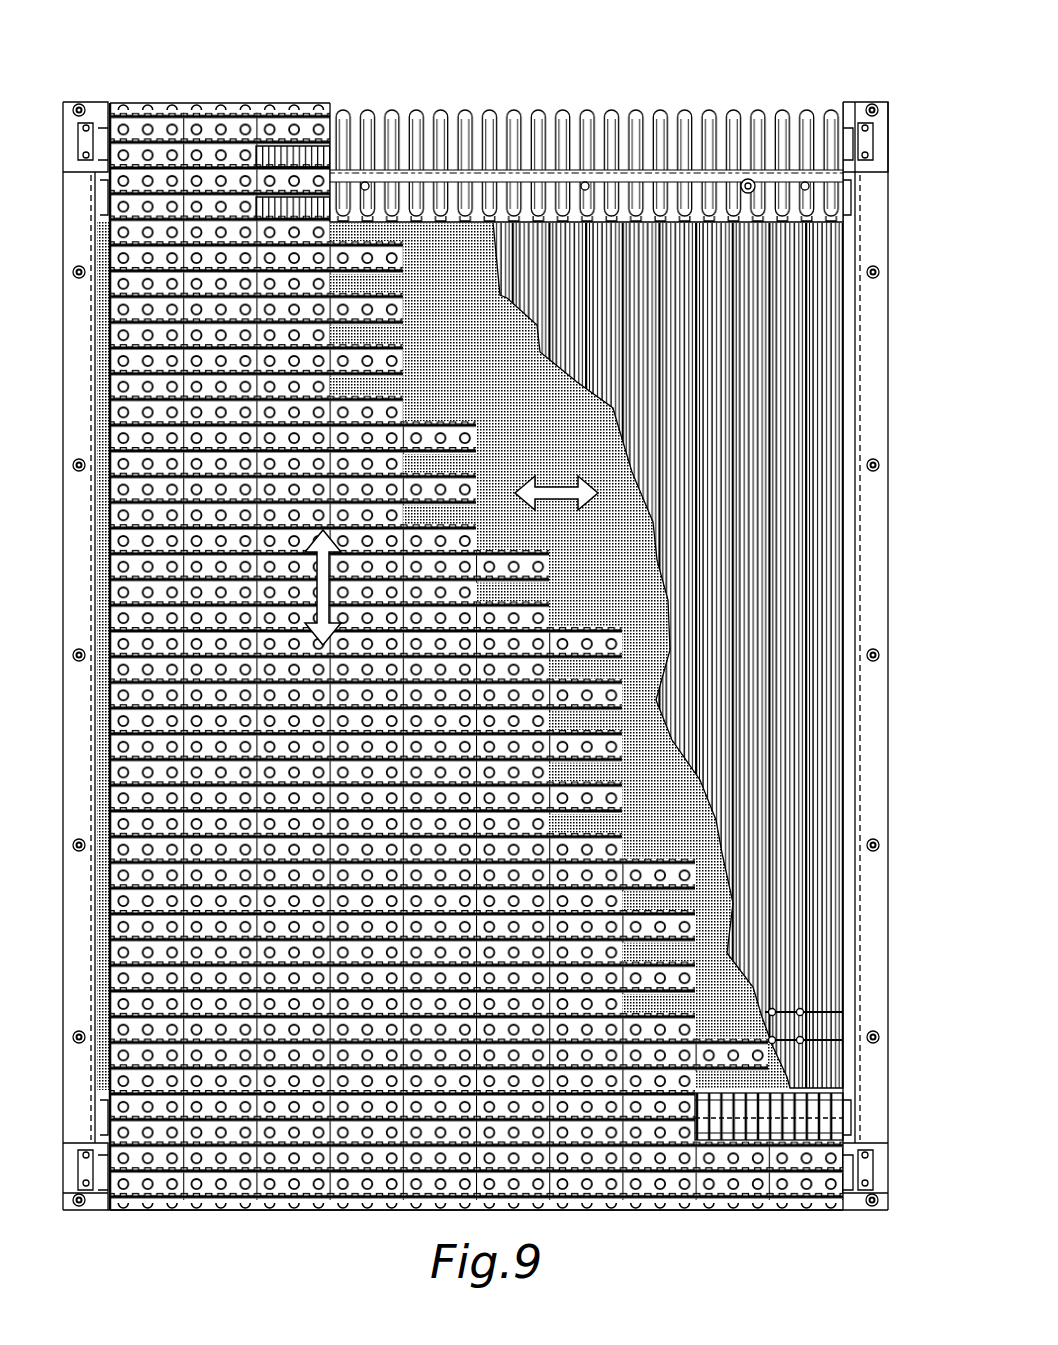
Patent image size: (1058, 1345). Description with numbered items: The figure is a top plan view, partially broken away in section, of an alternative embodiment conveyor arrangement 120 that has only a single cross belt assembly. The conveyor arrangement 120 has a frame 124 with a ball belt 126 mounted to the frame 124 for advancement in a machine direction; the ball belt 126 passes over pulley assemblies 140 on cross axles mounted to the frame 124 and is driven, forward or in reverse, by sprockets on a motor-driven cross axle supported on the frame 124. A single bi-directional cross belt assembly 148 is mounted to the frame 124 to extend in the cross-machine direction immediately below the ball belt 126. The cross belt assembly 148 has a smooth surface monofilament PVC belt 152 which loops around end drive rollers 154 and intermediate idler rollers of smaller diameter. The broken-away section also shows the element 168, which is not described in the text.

The conveyor arrangement 120 is at (475, 605).
The ball belt 126 is at (303, 103).
The pulley assemblies 140 is at (648, 103).
The frame 124 is at (885, 150).
The end drive rollers 154 is at (95, 256).
The cross belt assembly 148 is at (853, 262).
The strands 168 is at (805, 432).
The belt 152 is at (614, 589).